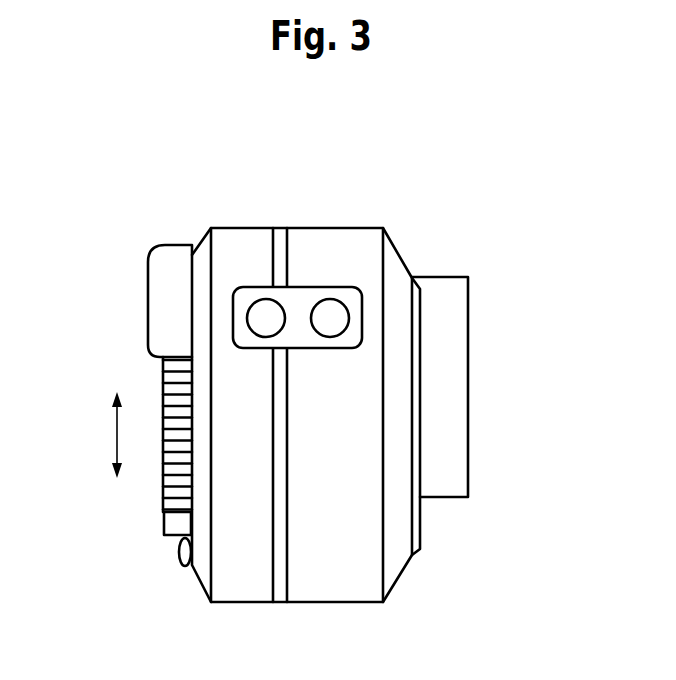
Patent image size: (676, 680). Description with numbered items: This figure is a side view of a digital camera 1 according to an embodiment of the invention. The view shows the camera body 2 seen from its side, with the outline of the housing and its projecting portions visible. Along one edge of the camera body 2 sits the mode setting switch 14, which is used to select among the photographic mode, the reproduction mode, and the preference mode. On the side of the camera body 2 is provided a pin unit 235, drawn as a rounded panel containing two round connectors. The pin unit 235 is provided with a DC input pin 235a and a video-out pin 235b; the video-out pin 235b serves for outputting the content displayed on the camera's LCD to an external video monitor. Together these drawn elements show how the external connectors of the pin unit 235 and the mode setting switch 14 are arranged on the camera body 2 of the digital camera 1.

The digital camera 1 is at (525, 200).
The camera body 2 is at (237, 207).
The mode setting switch 14 is at (162, 382).
The pin unit 235 is at (418, 164).
The DC input pin 235a is at (275, 318).
The video-out pin 235b is at (335, 318).